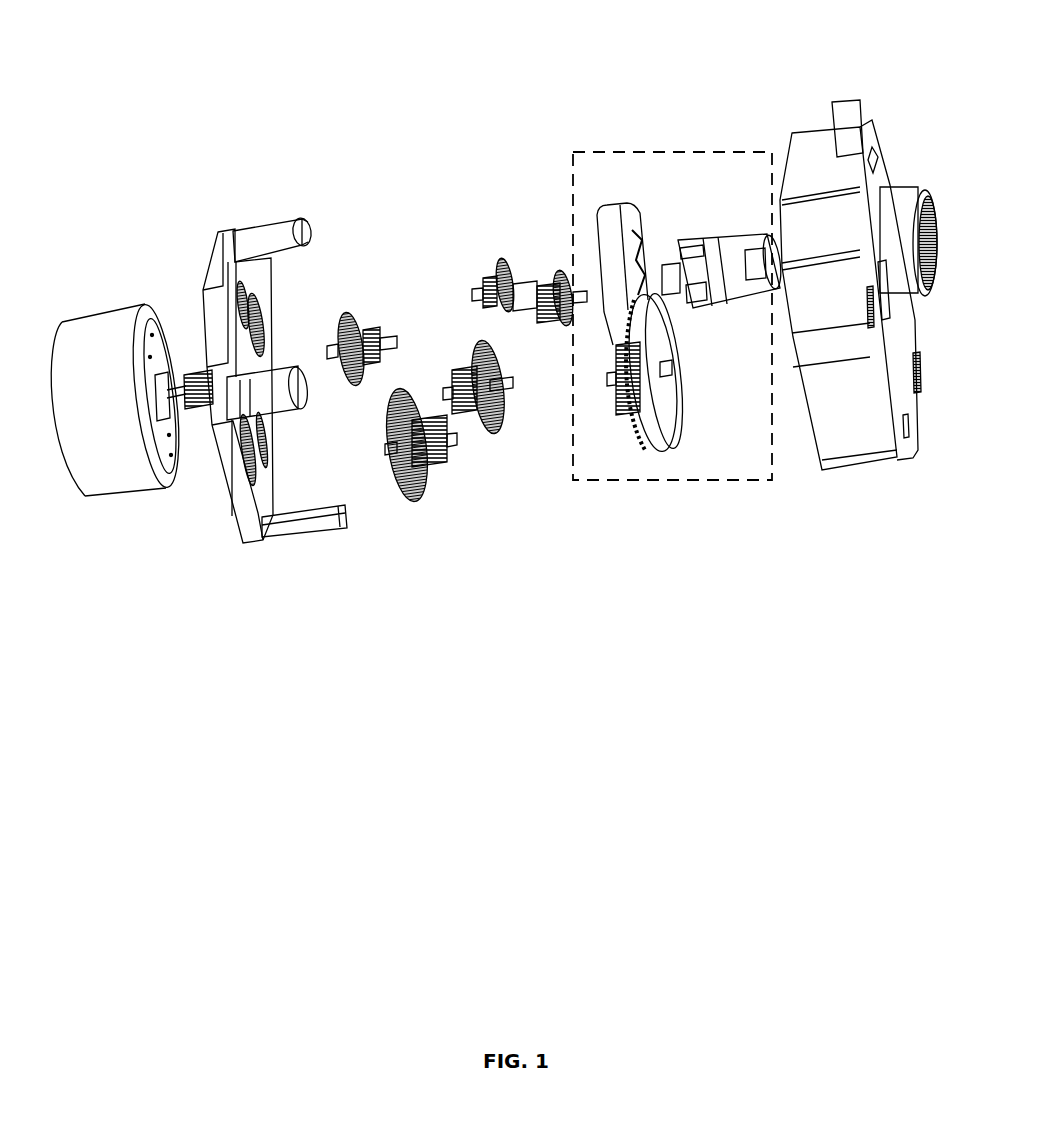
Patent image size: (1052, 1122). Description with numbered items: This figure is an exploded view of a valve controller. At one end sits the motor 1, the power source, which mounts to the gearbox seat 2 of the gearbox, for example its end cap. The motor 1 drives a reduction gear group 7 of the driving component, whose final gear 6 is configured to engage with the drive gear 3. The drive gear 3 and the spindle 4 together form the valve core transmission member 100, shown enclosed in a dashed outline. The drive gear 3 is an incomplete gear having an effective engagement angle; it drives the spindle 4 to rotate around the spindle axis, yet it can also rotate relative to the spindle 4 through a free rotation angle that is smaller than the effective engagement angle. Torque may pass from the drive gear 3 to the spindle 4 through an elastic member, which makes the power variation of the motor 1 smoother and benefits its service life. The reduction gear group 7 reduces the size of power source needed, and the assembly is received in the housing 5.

The motor 1 is at (100, 335).
The gearbox seat 2 is at (232, 253).
The drive gear 3 is at (626, 243).
The spindle 4 is at (733, 262).
The housing 5 is at (853, 405).
The final gear 6 is at (668, 410).
The reduction gear group 7 is at (556, 326).
The valve core transmission member 100 is at (573, 234).